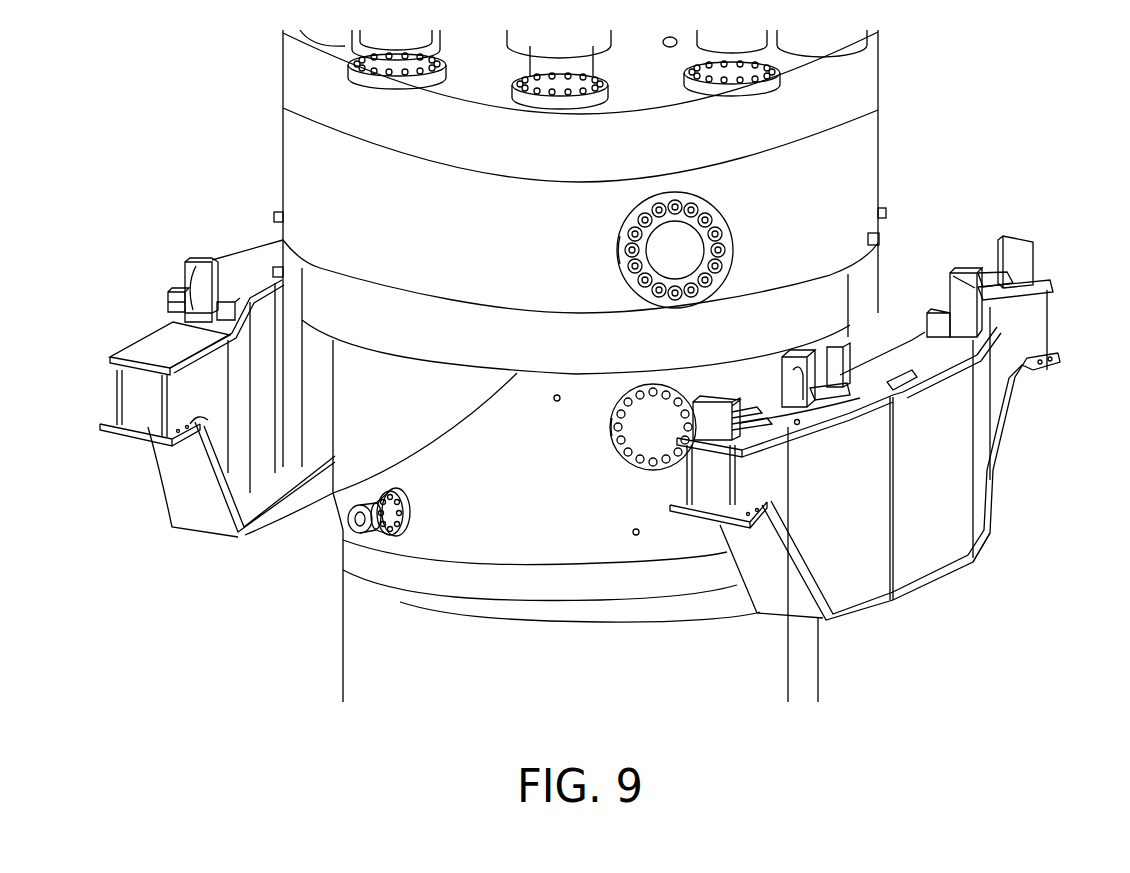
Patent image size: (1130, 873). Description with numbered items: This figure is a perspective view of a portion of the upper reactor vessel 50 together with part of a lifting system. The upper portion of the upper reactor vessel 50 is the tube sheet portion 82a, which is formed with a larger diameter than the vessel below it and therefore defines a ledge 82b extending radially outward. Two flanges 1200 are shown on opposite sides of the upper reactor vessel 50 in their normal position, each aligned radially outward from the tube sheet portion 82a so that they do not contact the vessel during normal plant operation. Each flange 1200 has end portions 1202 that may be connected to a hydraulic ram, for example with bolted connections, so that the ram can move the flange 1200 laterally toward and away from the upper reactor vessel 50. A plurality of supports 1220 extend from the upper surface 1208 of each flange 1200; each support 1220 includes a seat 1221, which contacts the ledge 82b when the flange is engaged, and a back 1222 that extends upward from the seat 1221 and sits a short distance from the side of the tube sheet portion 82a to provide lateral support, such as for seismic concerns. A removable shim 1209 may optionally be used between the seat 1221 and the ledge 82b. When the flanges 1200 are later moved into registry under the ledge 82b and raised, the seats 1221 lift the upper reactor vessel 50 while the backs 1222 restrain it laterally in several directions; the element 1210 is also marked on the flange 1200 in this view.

The upper reactor vessel 50 is at (477, 538).
The tube sheet portion 82a is at (310, 210).
The ledge 82b is at (347, 490).
The flange 1200 is at (208, 397).
The end portion 1202 is at (1022, 340).
The upper surface 1208 is at (938, 357).
The removable shim 1209 is at (920, 383).
The bar bend section 1210 is at (957, 537).
The support 1220 is at (962, 312).
The seat 1221 is at (200, 392).
The back 1222 is at (198, 277).